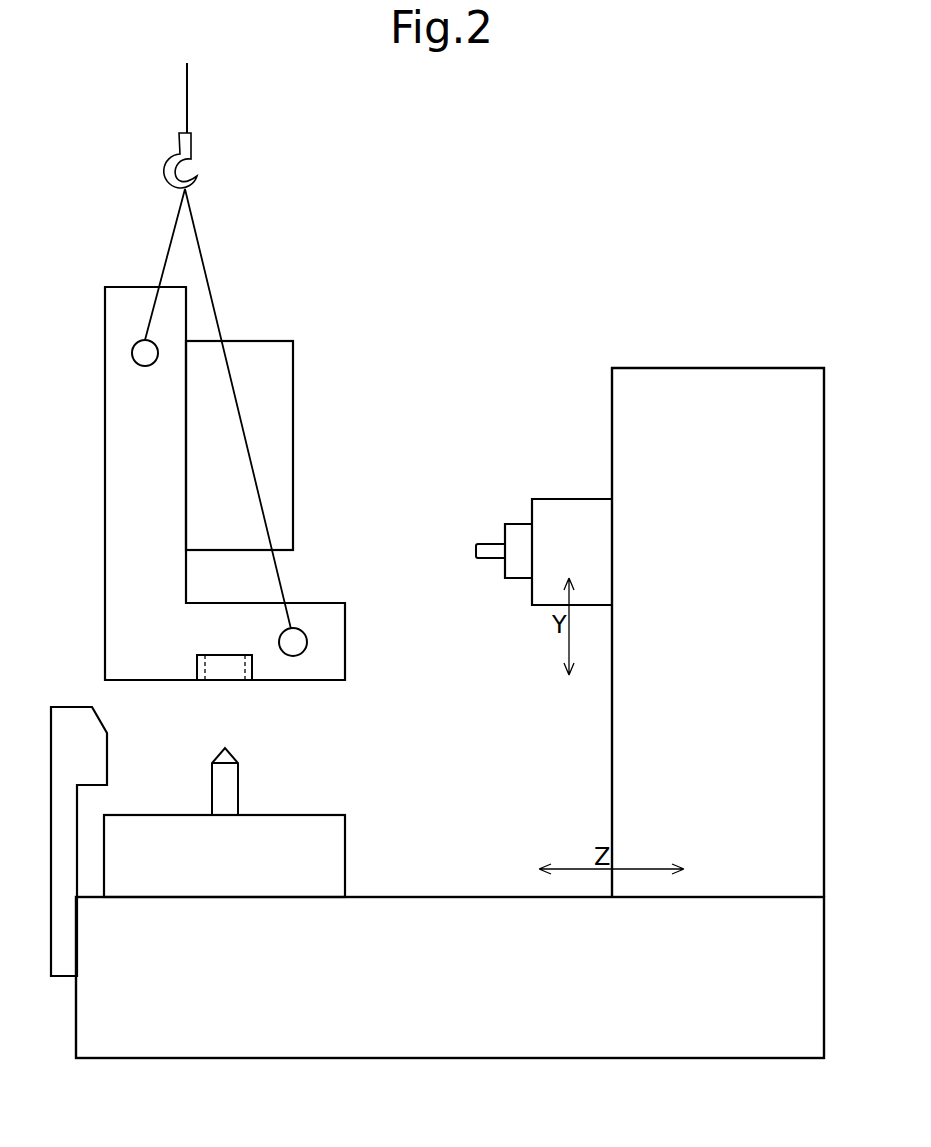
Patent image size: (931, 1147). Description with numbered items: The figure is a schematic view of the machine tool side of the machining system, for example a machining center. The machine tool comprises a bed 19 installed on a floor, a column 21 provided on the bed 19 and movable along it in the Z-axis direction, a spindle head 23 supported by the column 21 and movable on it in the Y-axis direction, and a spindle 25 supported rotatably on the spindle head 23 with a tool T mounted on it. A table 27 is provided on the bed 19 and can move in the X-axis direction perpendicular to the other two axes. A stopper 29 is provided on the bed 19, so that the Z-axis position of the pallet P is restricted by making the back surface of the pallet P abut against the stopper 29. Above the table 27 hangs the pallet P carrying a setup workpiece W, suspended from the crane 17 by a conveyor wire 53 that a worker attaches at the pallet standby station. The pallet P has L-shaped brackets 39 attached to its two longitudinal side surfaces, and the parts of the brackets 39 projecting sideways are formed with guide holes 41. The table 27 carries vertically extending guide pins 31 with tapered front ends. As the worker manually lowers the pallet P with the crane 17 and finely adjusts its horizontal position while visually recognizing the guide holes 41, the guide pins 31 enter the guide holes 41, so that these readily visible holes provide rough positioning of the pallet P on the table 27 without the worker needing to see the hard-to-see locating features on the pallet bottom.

The crane 17 is at (187, 93).
The conveyor wire 53 is at (204, 265).
The pallet P is at (118, 440).
The workpiece W is at (283, 427).
The L-shaped bracket 39 is at (253, 668).
The guide hole 41 is at (237, 685).
The stopper 29 is at (73, 707).
The guide pin 31 is at (235, 792).
The table 27 is at (335, 858).
The bed 19 is at (798, 975).
The column 21 is at (808, 597).
The spindle head 23 is at (570, 498).
The spindle 25 is at (520, 523).
The tool T is at (492, 542).